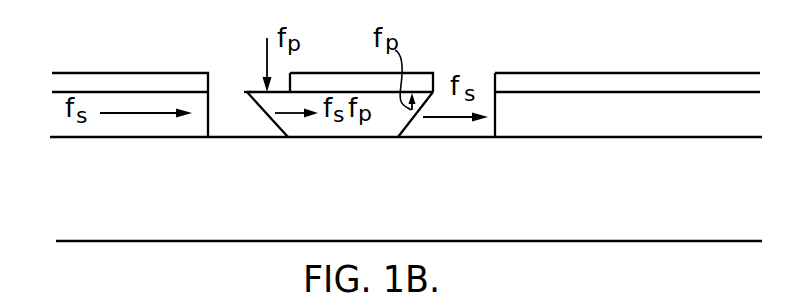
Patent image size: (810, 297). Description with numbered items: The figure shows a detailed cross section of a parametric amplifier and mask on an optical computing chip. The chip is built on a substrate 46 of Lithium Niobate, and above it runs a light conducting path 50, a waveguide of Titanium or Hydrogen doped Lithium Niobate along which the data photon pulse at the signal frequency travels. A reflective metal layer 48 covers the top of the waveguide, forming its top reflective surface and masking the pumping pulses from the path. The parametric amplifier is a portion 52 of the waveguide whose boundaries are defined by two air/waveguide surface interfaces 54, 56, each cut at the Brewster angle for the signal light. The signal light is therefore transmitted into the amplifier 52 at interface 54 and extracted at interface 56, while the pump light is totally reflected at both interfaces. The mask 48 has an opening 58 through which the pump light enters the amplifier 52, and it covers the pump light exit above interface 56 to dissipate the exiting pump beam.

The substrate 46 is at (577, 218).
The reflective metal layer 48 is at (587, 83).
The light conducting path 50 is at (146, 130).
The parametric amplifier portion 52 is at (376, 127).
The surface interface 54 is at (273, 124).
The surface interface 56 is at (412, 126).
The opening 58 is at (253, 91).